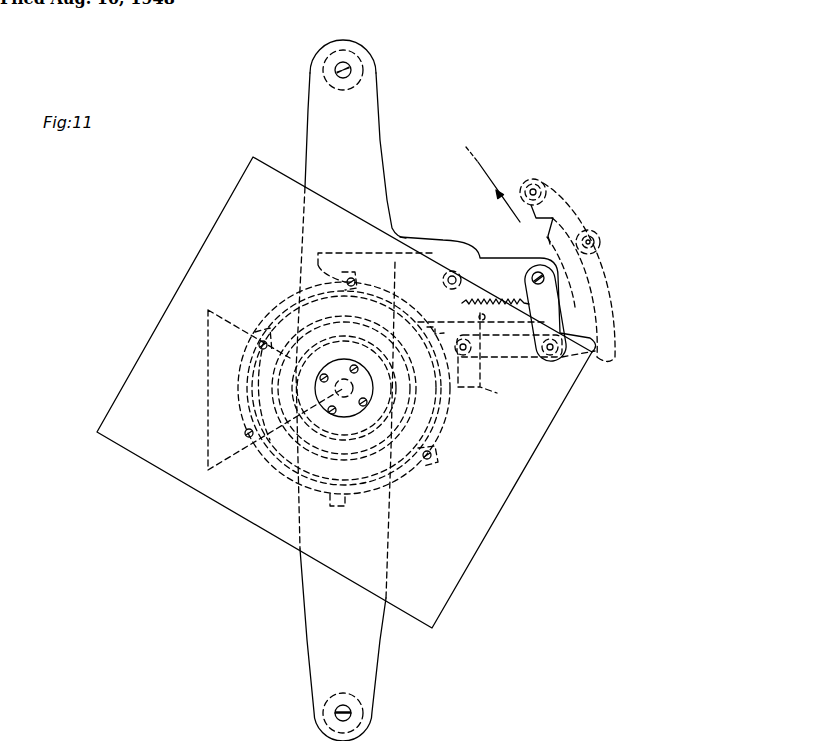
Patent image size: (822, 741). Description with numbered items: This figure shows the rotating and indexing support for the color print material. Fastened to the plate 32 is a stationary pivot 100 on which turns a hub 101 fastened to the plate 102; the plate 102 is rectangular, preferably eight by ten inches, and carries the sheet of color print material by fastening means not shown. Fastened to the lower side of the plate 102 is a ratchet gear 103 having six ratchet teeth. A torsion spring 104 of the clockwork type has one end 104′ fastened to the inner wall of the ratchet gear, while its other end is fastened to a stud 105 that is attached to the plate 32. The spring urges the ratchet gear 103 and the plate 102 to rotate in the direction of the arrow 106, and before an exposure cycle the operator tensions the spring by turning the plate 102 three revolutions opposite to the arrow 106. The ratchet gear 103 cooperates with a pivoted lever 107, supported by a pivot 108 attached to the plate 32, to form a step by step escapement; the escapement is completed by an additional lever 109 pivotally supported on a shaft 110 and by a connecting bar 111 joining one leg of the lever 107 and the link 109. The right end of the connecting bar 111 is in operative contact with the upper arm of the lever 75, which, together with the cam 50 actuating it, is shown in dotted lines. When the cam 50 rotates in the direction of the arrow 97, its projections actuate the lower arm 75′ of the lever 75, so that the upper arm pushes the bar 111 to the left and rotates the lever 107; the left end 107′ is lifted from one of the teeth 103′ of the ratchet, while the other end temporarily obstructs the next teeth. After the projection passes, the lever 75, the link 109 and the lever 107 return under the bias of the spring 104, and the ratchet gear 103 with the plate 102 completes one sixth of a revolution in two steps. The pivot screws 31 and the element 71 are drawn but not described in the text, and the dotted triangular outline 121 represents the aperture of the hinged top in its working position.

The pivot screws 31 is at (366, 70).
The plate 32 is at (370, 128).
The cam 50 is at (483, 158).
The arrow 97 is at (487, 188).
The lower arm 75′ is at (572, 200).
The cable guide 71 is at (597, 227).
The lever 75 is at (598, 241).
The pivoted lever 107 is at (447, 252).
The pivot 108 is at (455, 275).
The lever 109 is at (530, 276).
The shaft 110 is at (537, 271).
The connecting bar 111 is at (514, 354).
The left end of lever 107 107′ is at (340, 280).
The teeth of ratchet 103′ is at (363, 282).
The ratchet gear 103 is at (275, 475).
The arrow 106 is at (275, 268).
The end of torsion spring 104′ is at (262, 338).
The torsion spring 104 is at (262, 373).
The stud 105 is at (340, 379).
The stationary pivot 100 is at (352, 388).
The hub 101 is at (334, 414).
The triangular aperture 121 is at (207, 405).
The plate 102 is at (497, 516).